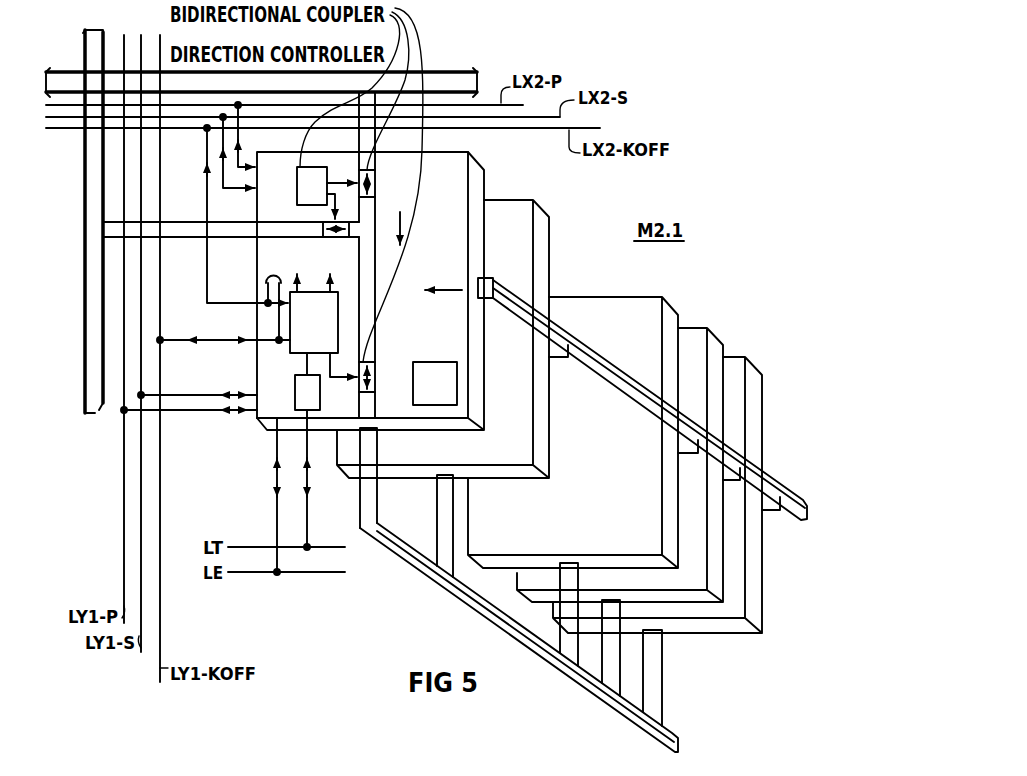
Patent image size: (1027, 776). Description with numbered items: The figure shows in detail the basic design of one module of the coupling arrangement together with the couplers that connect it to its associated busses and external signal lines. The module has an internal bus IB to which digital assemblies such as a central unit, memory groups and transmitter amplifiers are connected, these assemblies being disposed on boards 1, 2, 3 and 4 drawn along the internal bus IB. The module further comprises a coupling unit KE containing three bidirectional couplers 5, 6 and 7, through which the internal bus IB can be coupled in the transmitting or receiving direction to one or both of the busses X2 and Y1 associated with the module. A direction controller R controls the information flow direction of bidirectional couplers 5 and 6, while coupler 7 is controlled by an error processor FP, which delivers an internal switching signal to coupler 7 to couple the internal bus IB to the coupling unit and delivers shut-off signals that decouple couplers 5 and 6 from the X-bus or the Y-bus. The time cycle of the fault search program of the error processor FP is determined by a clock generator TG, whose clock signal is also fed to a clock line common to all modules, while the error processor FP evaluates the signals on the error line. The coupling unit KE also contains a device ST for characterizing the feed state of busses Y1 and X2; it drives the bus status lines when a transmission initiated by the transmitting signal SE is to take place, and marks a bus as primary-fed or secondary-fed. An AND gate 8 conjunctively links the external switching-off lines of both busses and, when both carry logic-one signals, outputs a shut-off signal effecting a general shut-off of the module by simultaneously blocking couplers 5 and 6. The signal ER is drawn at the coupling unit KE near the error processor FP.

The board 1 is at (547, 226).
The board 2 is at (659, 306).
The board 3 is at (699, 340).
The board 4 is at (734, 370).
The bidirectional coupler 5 is at (375, 190).
The bidirectional coupler 6 is at (308, 187).
The bidirectional coupler 7 is at (376, 384).
The AND gate 8 is at (264, 276).
The coupling unit KE is at (468, 152).
The internal bus IB is at (372, 408).
The error processor FP is at (233, 443).
The clock generator TG is at (360, 592).
The direction controller R is at (330, 218).
The feed state characterizing device ST is at (508, 495).
The transmitting signal SE is at (443, 281).
The error signal ER is at (402, 218).
The bus X2 is at (449, 74).
The bus Y1 is at (102, 407).